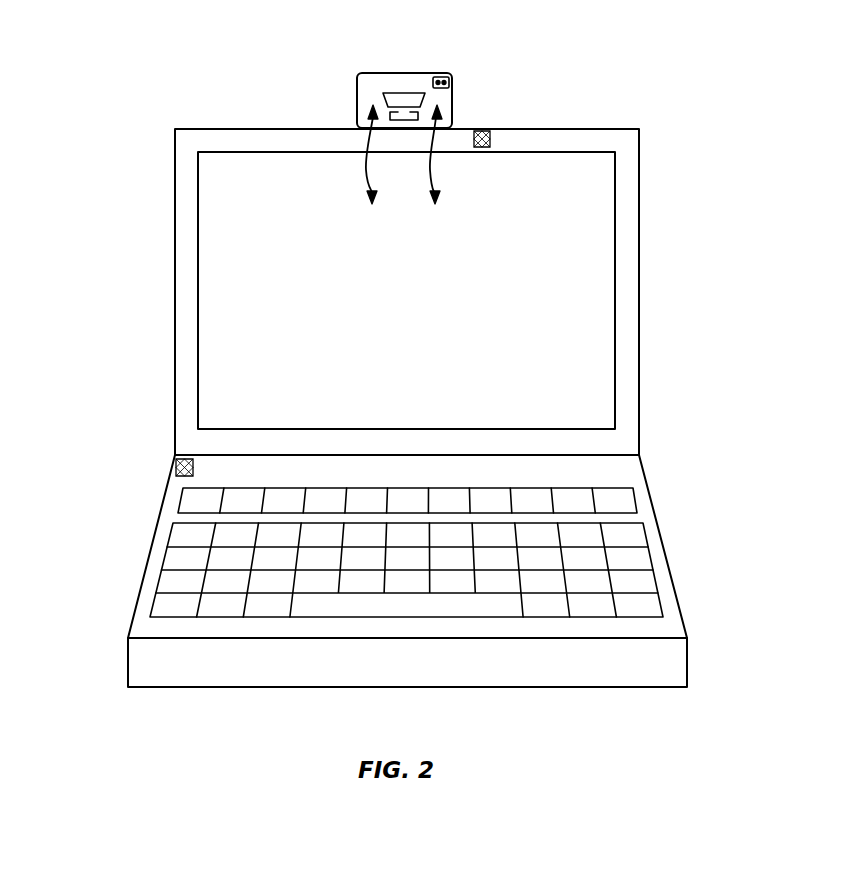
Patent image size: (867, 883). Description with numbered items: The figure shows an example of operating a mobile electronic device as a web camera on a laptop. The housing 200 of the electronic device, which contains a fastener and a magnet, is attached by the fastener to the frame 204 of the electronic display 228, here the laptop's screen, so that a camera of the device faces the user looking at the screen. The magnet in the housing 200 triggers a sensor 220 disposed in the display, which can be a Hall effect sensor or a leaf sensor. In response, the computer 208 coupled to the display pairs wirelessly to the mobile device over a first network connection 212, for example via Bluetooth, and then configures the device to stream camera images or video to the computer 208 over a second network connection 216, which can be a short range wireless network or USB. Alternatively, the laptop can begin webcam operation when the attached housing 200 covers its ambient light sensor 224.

The housing 200 is at (422, 73).
The frame 204 is at (238, 152).
The computer 208 is at (150, 542).
The first network connection 212 is at (364, 172).
The second network connection 216 is at (436, 143).
The sensor 220 is at (490, 132).
The ambient light sensor 224 is at (176, 463).
The electronic display 228 is at (423, 298).